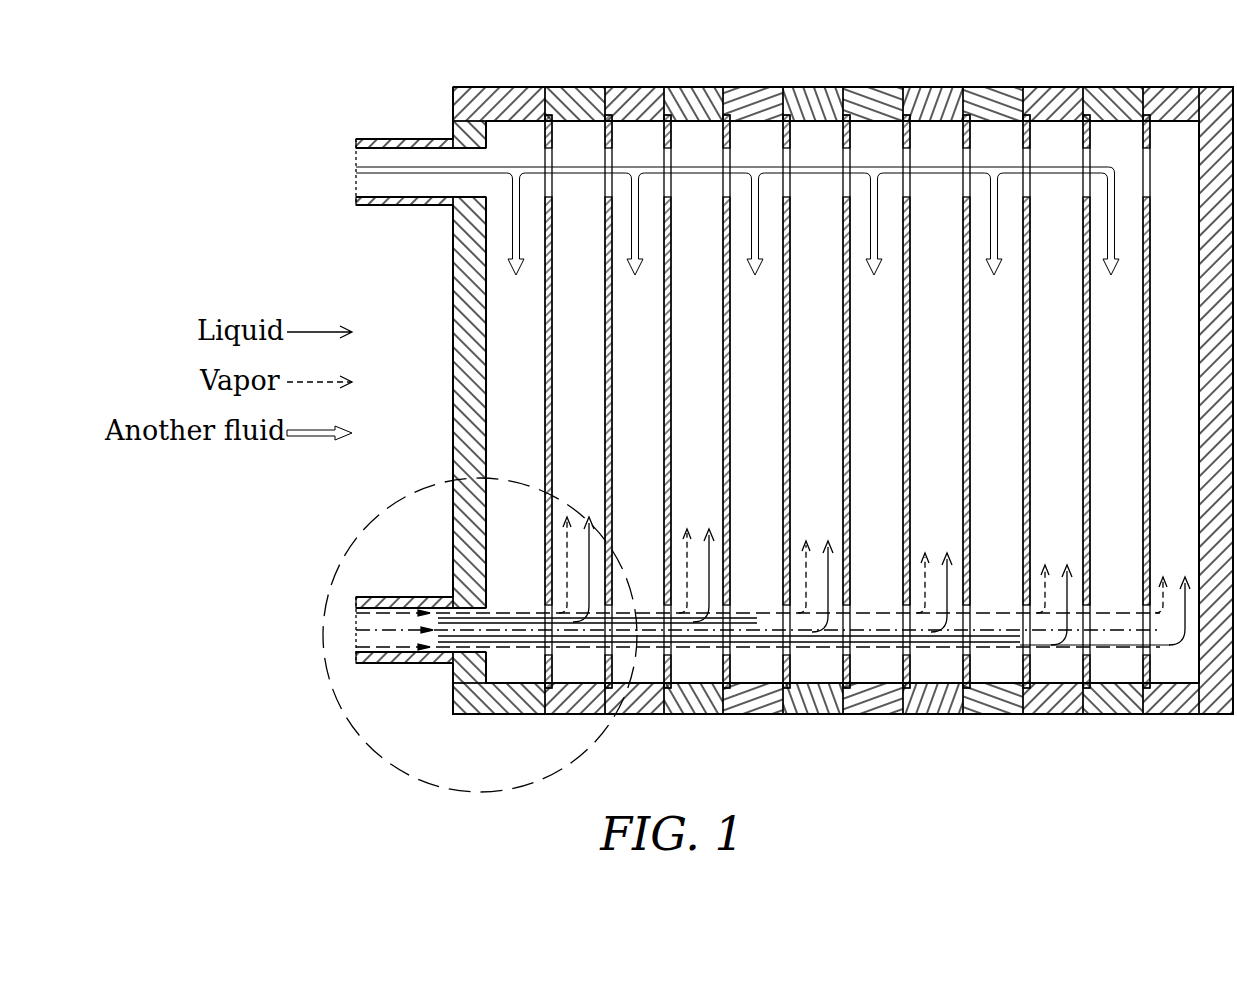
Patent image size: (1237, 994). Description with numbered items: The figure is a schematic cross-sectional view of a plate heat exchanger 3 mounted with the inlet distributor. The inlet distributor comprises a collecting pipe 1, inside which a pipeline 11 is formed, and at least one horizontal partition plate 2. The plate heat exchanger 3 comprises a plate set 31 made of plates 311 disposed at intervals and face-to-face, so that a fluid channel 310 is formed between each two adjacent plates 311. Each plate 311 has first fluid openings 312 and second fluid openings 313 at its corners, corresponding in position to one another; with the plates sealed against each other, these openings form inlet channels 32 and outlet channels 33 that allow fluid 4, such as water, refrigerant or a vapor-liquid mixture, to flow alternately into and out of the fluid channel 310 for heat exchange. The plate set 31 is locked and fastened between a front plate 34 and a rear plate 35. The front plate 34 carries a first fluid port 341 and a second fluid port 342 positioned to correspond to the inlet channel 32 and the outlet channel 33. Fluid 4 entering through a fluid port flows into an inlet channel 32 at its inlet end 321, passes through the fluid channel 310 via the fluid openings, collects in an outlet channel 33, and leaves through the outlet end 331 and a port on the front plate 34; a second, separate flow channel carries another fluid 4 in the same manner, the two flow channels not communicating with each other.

The collecting pipe 1 is at (357, 607).
The pipeline 11 is at (356, 641).
The horizontal partition plate 2 is at (466, 627).
The plate heat exchanger 3 is at (443, 86).
The plate set 31 is at (780, 30).
The fluid channel 310 is at (888, 248).
The plate 311 is at (789, 120).
The first fluid opening 312 is at (684, 150).
The second fluid opening 313 is at (907, 150).
The inlet channel 32 is at (570, 653).
The inlet end 321 is at (525, 660).
The outlet channel 33 is at (592, 152).
The outlet end 331 is at (507, 155).
The front plate 34 is at (460, 325).
The first fluid port 341 is at (410, 600).
The second fluid port 342 is at (386, 143).
The rear plate 35 is at (1206, 100).
The fluid 4 is at (513, 197).